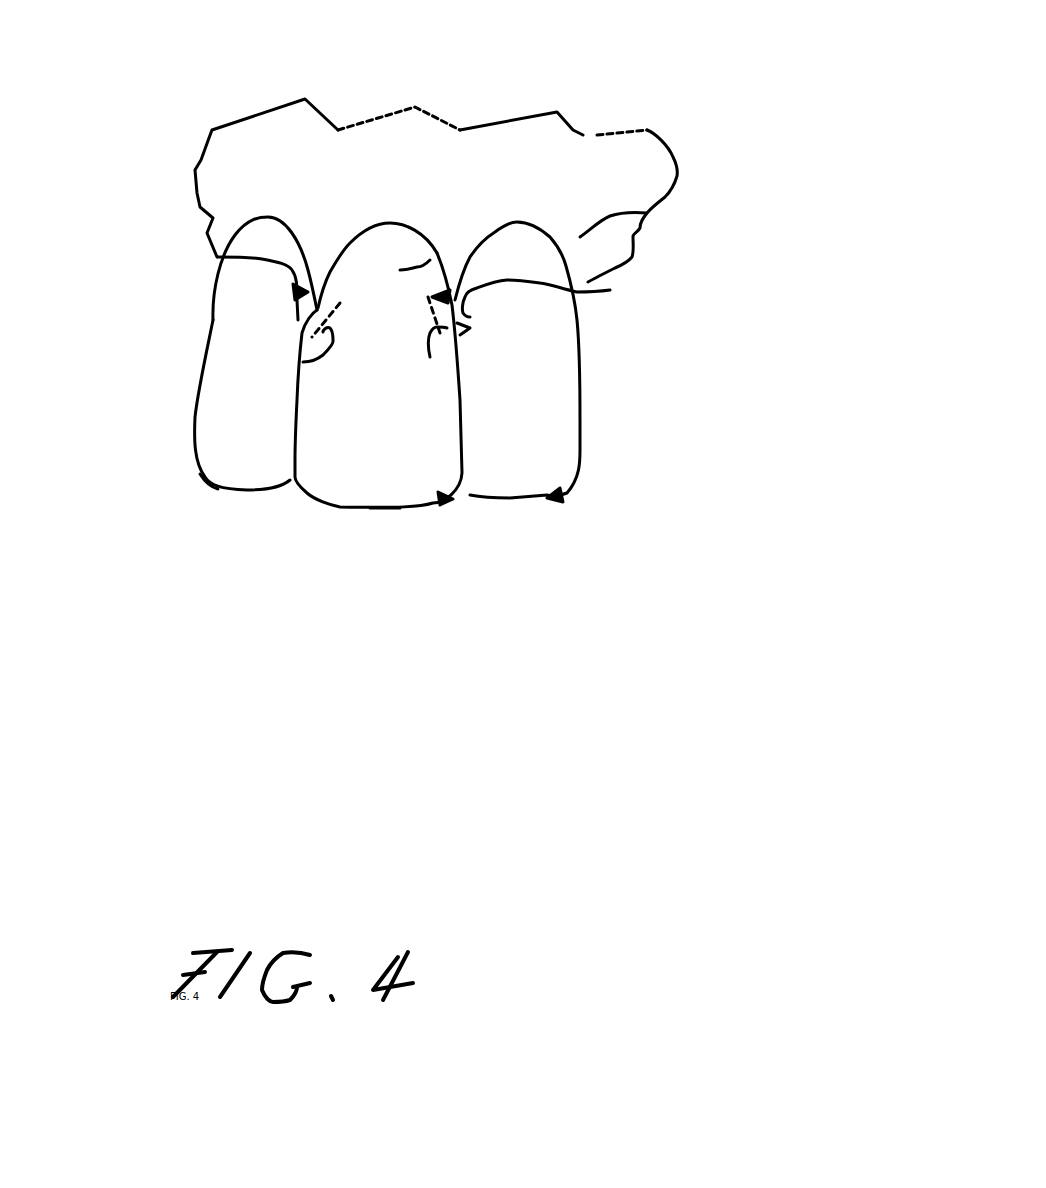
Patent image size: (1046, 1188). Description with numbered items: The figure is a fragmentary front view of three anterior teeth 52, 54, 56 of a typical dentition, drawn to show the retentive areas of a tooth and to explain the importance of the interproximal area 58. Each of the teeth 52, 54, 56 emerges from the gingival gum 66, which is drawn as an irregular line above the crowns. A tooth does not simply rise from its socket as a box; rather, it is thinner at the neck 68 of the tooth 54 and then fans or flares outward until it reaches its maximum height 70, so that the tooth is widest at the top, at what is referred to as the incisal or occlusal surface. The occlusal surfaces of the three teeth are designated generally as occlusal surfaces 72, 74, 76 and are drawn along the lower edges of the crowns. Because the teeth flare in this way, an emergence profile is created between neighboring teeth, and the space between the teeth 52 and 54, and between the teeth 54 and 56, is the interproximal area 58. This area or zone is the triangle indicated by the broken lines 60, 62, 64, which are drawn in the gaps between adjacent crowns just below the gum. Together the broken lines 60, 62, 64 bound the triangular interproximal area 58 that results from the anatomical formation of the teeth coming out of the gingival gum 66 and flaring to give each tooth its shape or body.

The anterior tooth 52 is at (212, 420).
The anterior tooth 54 is at (350, 482).
The anterior tooth 56 is at (577, 496).
The interproximal area 58 is at (307, 307).
The broken line 60 is at (218, 257).
The broken line 62 is at (300, 322).
The broken line 64 is at (303, 362).
The gingival gum 66 is at (650, 213).
The neck of the tooth 68 is at (430, 260).
The maximum height 70 is at (450, 498).
The occlusal surface 72 is at (218, 490).
The occlusal surface 74 is at (385, 508).
The occlusal surface 76 is at (543, 497).